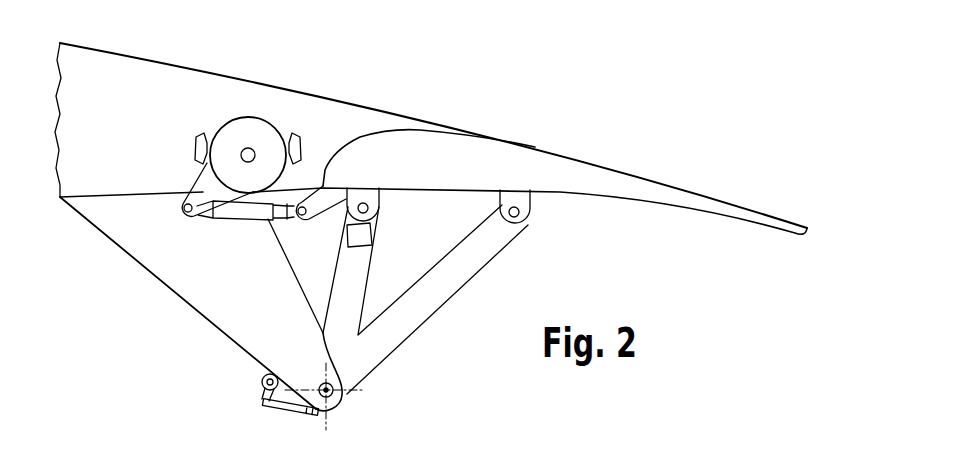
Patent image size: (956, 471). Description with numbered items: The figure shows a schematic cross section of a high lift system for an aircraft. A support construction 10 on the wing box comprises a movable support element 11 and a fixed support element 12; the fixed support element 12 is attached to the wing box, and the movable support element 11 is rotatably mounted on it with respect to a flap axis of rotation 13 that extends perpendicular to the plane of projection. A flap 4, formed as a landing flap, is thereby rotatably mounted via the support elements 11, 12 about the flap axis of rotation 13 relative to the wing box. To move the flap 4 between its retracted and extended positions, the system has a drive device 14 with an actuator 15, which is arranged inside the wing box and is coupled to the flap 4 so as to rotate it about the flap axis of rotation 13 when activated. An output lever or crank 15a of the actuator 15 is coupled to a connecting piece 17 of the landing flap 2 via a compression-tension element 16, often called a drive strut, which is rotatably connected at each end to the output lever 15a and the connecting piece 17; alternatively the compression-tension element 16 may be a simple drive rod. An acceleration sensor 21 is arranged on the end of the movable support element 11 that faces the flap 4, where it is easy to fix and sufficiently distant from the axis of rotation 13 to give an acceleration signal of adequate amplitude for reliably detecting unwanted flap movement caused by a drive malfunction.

The landing flap 2 is at (133, 88).
The flap 4 is at (525, 162).
The support construction 10 is at (209, 396).
The movable support element 11 is at (418, 309).
The fixed support element 12 is at (182, 278).
The flap axis of rotation 13 is at (337, 404).
The drive device 14 is at (273, 117).
The actuator 15 is at (242, 130).
The output lever 15a is at (202, 190).
The compression-tension element 16 is at (250, 212).
The connecting piece 17 is at (323, 198).
The acceleration sensor 21 is at (372, 241).